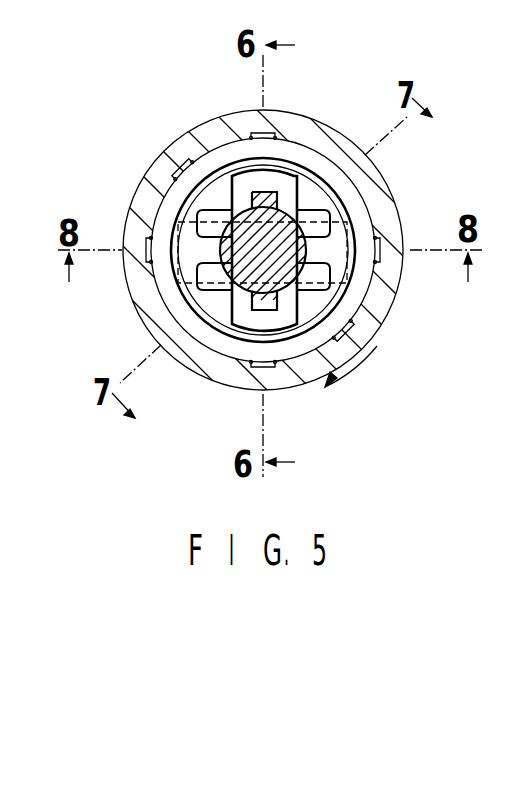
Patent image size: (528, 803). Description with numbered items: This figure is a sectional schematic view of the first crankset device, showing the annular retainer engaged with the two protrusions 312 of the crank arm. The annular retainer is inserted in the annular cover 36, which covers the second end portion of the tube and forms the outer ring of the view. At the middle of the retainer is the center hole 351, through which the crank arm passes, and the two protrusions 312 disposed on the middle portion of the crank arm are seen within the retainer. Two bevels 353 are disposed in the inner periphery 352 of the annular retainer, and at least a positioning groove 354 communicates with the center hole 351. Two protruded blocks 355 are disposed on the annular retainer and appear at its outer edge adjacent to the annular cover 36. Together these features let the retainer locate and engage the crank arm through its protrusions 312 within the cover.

The annular cover 36 is at (159, 157).
The protrusions 312 is at (258, 202).
The center hole 351 is at (285, 317).
The inner periphery 352 is at (238, 285).
The bevels 353 is at (212, 207).
The positioning groove 354 is at (215, 250).
The protruded blocks 355 is at (373, 252).